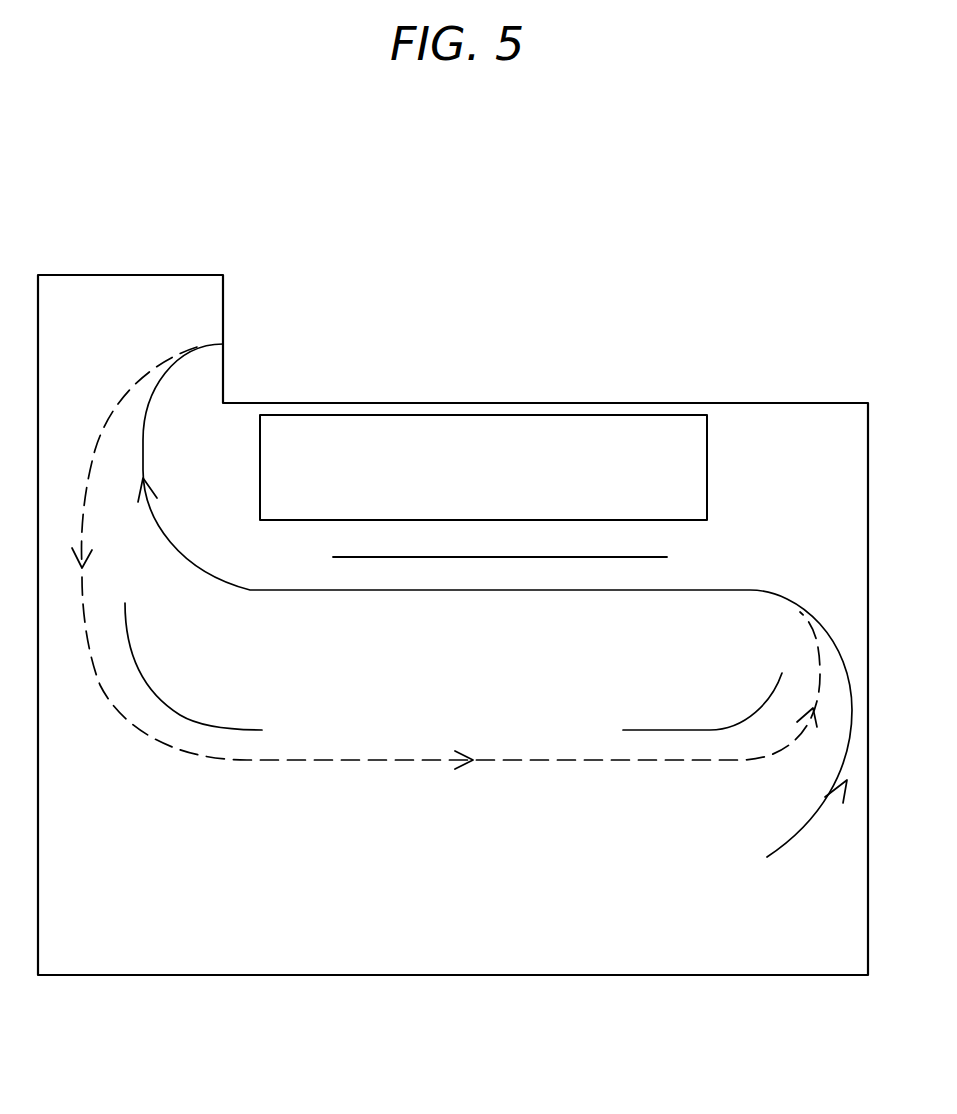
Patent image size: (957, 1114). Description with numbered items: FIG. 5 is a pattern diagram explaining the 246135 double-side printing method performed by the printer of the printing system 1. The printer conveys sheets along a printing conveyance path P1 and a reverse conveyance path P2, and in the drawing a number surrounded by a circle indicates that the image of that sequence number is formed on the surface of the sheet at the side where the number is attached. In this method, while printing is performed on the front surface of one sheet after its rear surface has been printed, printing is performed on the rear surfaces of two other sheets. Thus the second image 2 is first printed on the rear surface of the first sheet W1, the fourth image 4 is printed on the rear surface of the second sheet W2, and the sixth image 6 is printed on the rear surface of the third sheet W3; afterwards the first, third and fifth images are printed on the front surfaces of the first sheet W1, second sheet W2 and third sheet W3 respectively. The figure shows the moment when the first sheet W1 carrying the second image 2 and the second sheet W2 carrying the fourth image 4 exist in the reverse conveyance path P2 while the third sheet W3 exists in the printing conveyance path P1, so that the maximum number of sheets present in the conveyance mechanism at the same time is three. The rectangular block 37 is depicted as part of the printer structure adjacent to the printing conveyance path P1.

The printing system 1 is at (502, 282).
The fixing unit 37 is at (638, 433).
The sixth image 6 is at (500, 542).
The fourth image 4 is at (193, 666).
The second image 2 is at (702, 701).
The first sheet W1 is at (655, 733).
The second sheet W2 is at (252, 732).
The third sheet W3 is at (350, 557).
The printing conveyance path P1 is at (835, 645).
The reverse conveyance path P2 is at (100, 688).